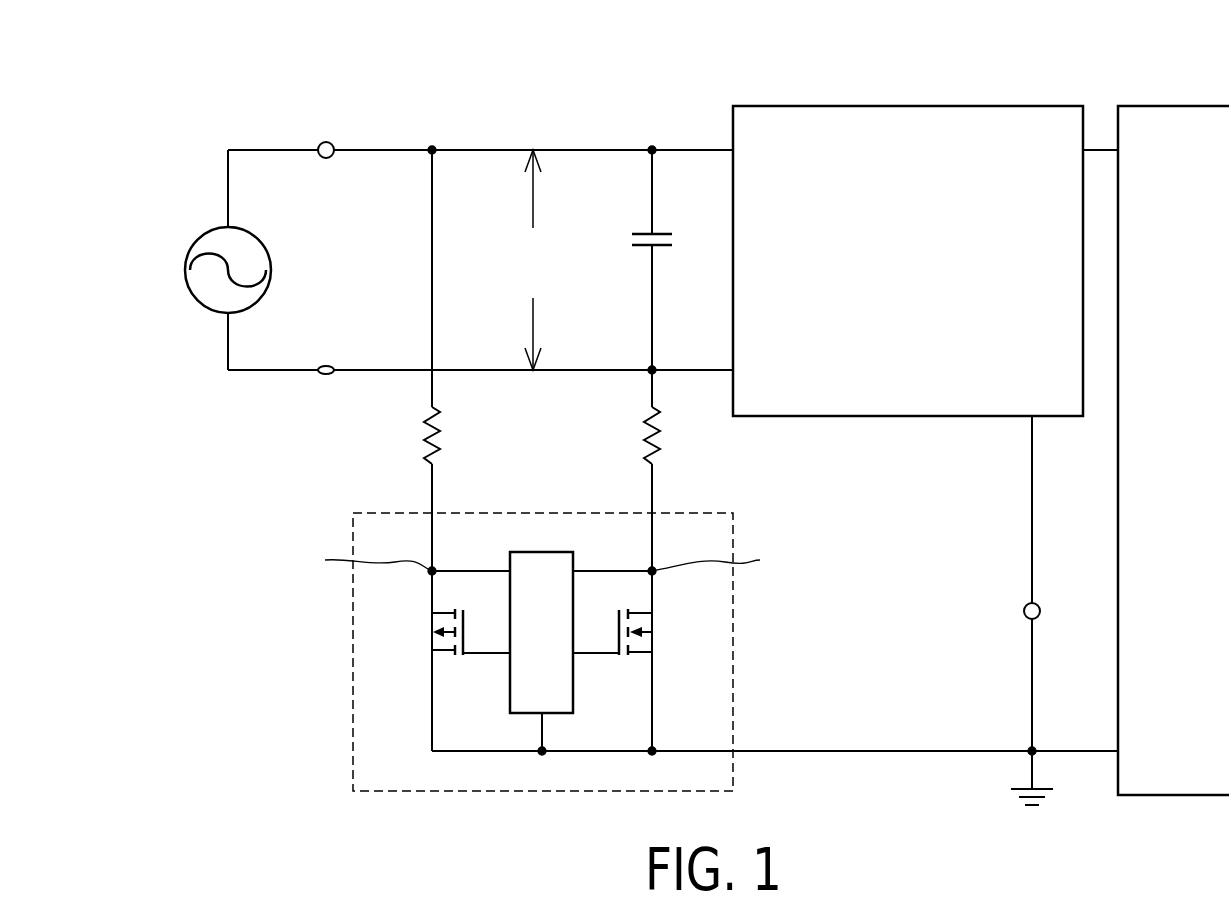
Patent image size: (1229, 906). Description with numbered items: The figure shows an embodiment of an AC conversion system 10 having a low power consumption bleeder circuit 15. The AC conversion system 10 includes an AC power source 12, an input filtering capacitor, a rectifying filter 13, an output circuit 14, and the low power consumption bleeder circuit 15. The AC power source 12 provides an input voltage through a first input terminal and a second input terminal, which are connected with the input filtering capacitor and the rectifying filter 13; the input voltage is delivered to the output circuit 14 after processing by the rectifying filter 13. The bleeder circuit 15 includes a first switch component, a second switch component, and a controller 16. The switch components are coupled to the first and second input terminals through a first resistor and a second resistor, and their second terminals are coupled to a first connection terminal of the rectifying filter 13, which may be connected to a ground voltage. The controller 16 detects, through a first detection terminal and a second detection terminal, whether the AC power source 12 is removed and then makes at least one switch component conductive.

The AC conversion system 10 is at (149, 78).
The AC power source 12 is at (203, 232).
The rectifying filter 13 is at (910, 106).
The output circuit 14 is at (1176, 106).
The low power consumption bleeder circuit 15 is at (353, 768).
The controller 16 is at (527, 713).